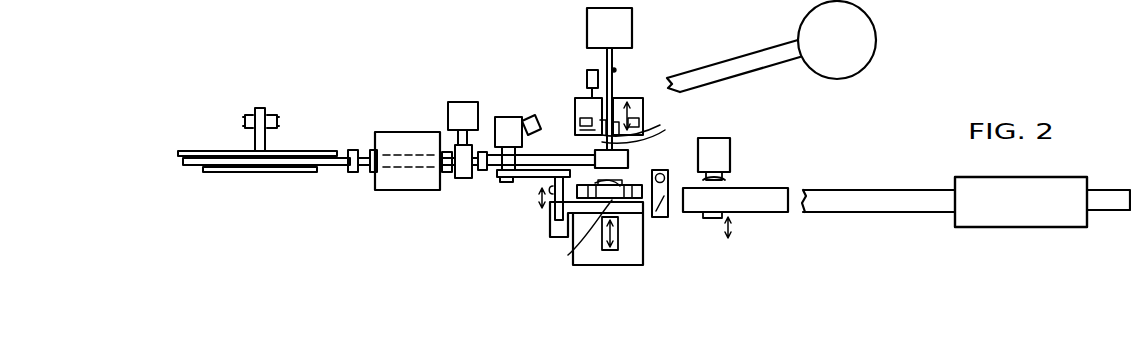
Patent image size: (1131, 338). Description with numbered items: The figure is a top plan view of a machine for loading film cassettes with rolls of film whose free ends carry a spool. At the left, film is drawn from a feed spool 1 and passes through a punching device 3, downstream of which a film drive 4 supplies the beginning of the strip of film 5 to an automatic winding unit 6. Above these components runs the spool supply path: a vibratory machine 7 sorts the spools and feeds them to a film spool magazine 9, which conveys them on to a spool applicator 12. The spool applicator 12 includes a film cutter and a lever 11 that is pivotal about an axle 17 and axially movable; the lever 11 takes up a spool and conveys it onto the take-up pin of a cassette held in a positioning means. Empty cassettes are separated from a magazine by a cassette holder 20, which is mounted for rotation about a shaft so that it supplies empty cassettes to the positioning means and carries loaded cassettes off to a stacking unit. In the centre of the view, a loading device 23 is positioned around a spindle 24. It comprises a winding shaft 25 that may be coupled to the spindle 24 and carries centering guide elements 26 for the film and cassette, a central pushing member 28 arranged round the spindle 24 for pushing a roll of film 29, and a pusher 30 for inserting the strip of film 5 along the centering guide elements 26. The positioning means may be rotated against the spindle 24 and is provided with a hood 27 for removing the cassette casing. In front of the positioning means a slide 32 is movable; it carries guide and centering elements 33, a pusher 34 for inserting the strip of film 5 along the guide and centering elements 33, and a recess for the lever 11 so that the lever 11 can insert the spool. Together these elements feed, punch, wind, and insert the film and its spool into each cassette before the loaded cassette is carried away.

The feed spool 1 is at (186, 161).
The punching device 3 is at (373, 185).
The film drive 4 is at (465, 179).
The strip of film 5 is at (348, 163).
The automatic winding unit 6 is at (596, 158).
The vibratory machine 7 is at (812, 23).
The film spool magazine 9 is at (529, 118).
The lever 11 is at (500, 180).
The spool applicator 12 is at (456, 148).
The axle 17 is at (545, 188).
The cassette holder 20 is at (730, 158).
The loading device 23 is at (660, 88).
The spindle 24 is at (614, 70).
The winding shaft 25 is at (641, 124).
The centering guide elements 26 is at (665, 131).
The hood 27 is at (673, 183).
The central pushing member 28 is at (600, 127).
The roll of film 29 is at (630, 165).
The pusher 30 is at (578, 128).
The slide 32 is at (643, 254).
The guide and centering elements 33 is at (645, 216).
The pusher 34 is at (579, 227).